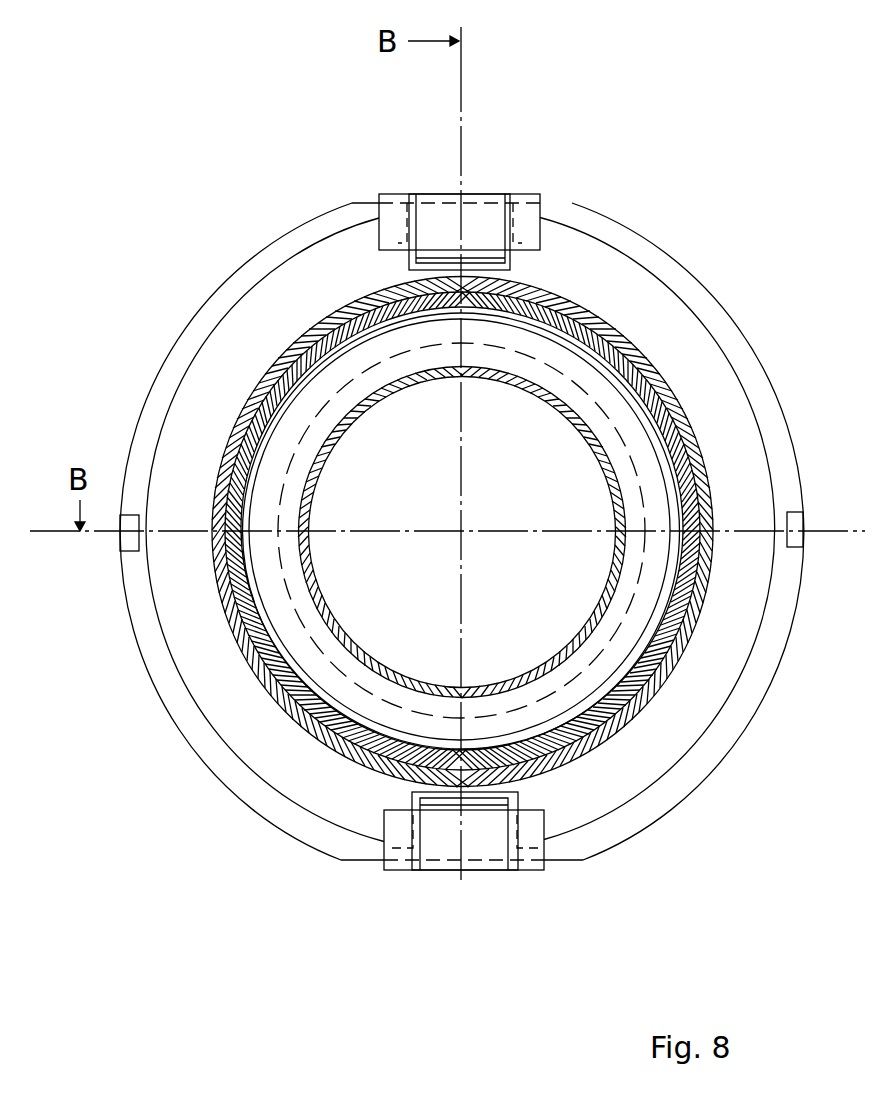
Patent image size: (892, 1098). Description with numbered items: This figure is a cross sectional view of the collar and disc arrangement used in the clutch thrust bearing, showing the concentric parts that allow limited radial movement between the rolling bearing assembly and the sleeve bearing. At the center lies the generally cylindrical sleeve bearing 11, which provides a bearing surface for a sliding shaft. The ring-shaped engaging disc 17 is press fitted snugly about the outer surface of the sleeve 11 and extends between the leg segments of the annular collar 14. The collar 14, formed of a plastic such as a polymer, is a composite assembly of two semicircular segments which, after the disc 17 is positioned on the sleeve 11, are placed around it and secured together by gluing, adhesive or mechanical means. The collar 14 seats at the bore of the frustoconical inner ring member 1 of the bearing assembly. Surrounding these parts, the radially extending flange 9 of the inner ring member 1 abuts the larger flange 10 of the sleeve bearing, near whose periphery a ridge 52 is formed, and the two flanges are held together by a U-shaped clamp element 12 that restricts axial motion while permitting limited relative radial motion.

The inner ring member 1 is at (240, 645).
The radially extending flange 9 is at (235, 362).
The flange 10 is at (258, 268).
The sleeve bearing 11 is at (385, 380).
The clamp element 12 is at (480, 218).
The annular collar means 14 is at (226, 487).
The annular engaging disc means 17 is at (583, 375).
The ridge 52 is at (795, 510).